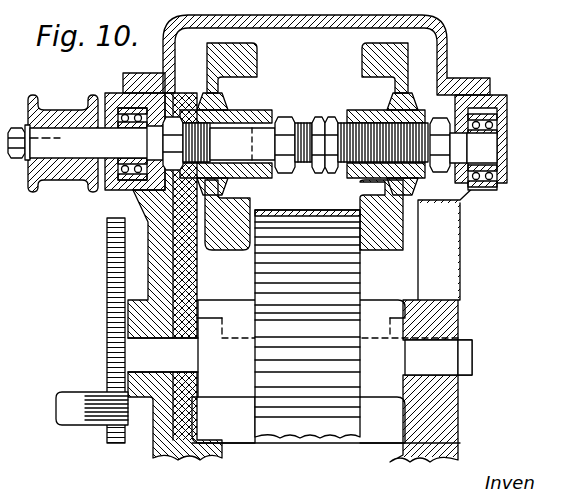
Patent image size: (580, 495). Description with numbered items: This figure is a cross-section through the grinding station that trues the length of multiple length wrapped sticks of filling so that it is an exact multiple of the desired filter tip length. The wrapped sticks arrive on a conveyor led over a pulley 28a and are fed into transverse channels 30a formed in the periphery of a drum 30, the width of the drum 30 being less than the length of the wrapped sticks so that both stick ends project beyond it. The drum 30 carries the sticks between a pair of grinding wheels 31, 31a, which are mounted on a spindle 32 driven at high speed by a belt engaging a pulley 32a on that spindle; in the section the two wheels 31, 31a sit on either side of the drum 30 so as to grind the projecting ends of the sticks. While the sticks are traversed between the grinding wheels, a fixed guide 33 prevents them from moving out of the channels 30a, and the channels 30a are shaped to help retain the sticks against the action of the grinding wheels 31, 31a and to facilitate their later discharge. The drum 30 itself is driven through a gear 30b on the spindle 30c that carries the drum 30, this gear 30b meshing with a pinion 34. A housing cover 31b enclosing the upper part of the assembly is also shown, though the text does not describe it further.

The pulley 28a is at (240, 296).
The drum 30 is at (358, 306).
The transverse channels 30a is at (335, 295).
The gear 30b is at (108, 240).
The spindle 30c is at (150, 353).
The grinding wheel 31 is at (243, 68).
The grinding wheel 31a is at (383, 70).
The cover 31b is at (300, 28).
The spindle 32 is at (312, 130).
The pulley 32a is at (60, 180).
The fixed guide 33 is at (311, 213).
The pinion 34 is at (90, 410).